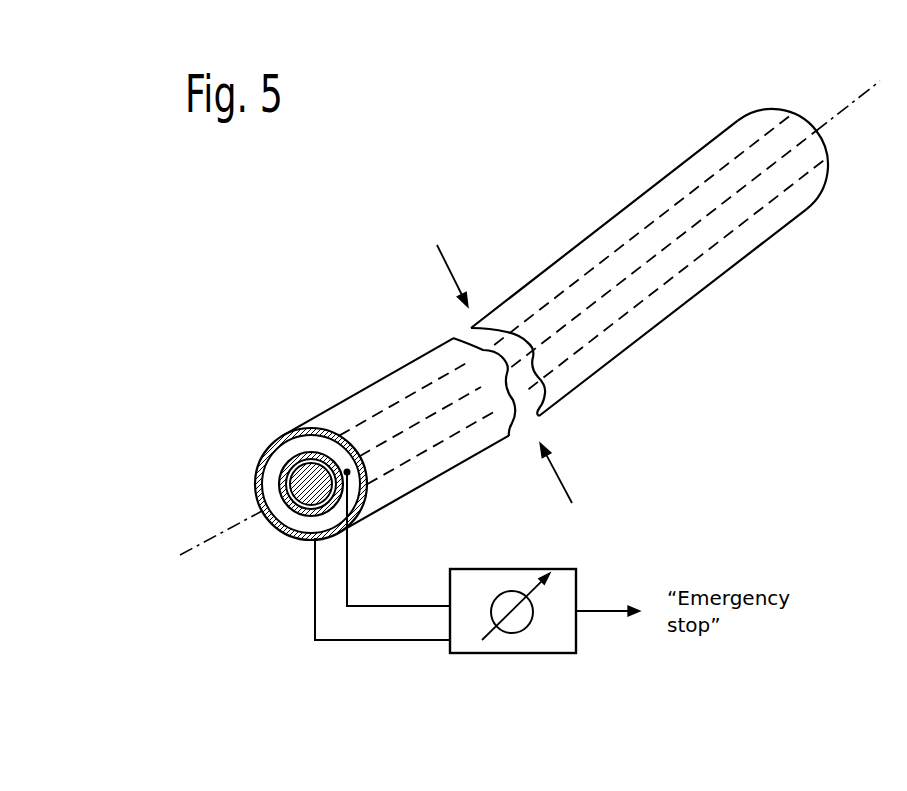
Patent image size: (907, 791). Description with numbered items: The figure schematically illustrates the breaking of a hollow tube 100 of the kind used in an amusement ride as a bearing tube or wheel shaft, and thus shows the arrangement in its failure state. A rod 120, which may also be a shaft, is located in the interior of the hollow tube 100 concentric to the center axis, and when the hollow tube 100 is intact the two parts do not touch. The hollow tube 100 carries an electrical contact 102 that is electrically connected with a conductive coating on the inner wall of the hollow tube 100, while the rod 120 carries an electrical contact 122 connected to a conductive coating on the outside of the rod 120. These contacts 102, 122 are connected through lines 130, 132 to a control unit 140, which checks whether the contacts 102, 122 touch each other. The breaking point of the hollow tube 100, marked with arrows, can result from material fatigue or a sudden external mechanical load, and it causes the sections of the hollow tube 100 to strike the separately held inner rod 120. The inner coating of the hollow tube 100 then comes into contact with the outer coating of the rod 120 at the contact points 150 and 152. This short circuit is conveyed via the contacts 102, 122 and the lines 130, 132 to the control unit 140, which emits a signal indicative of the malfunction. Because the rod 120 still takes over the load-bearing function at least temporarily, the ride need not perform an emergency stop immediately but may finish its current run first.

The hollow tube 100 is at (352, 398).
The electrical contact 102 is at (310, 545).
The rod 120 is at (717, 170).
The electrical contact 122 is at (372, 492).
The line 130 is at (355, 643).
The line 132 is at (350, 545).
The control unit 140 is at (548, 653).
The contact point 150 is at (472, 326).
The contact point 152 is at (452, 343).